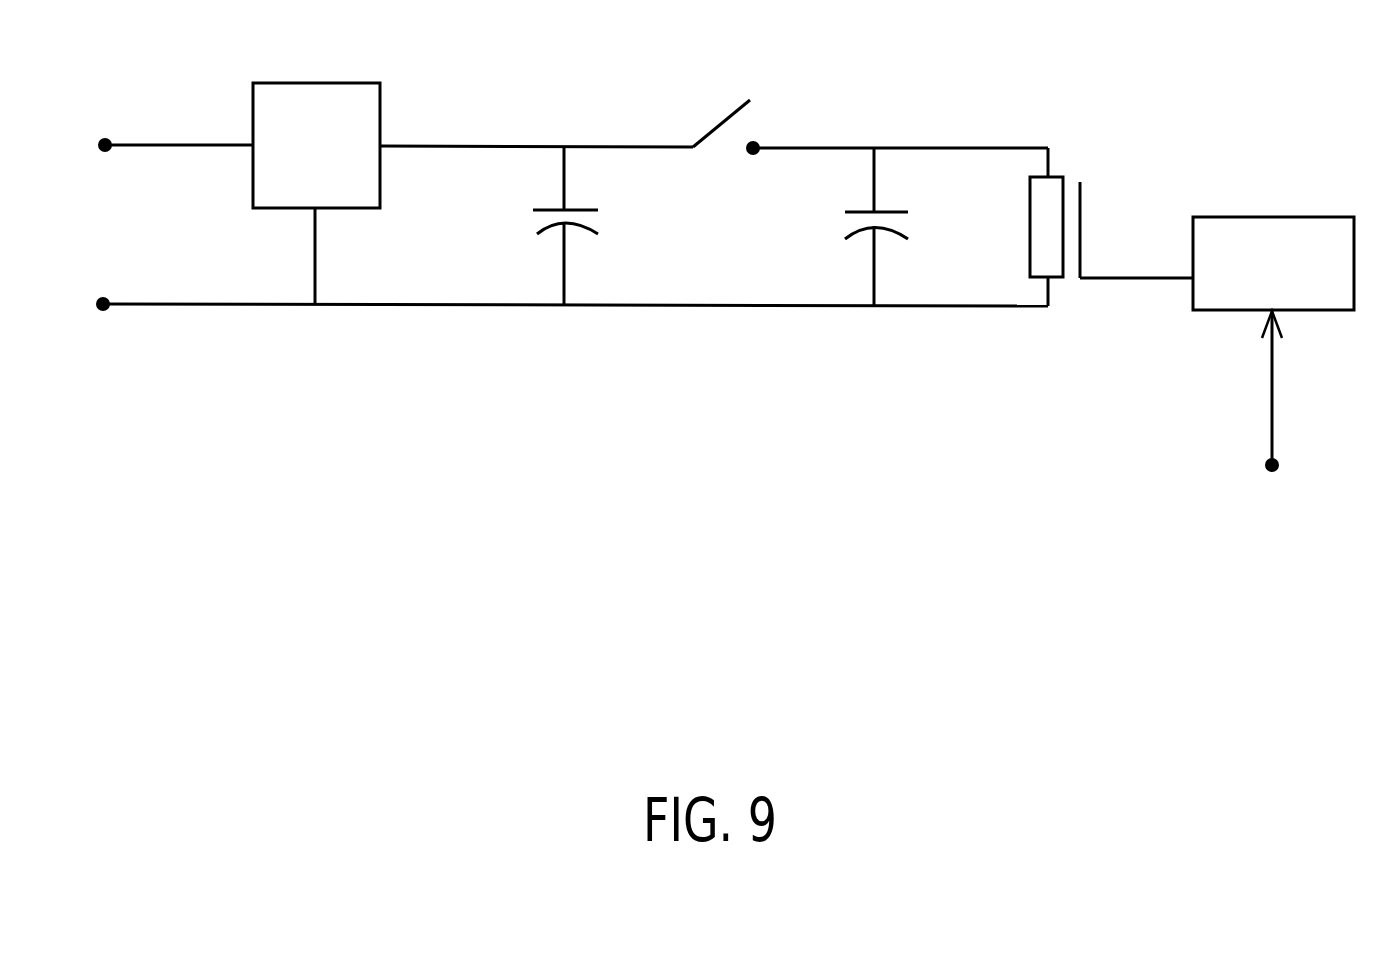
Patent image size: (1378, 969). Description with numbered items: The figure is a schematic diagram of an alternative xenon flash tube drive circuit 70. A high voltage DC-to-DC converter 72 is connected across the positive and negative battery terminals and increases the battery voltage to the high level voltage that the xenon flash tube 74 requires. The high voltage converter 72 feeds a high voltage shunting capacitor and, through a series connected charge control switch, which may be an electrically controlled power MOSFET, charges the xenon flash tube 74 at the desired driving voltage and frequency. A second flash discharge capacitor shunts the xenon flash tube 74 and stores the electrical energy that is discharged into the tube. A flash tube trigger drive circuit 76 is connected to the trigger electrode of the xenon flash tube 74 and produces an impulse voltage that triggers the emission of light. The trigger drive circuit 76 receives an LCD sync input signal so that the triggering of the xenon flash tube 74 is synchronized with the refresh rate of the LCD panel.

The xenon flash tube drive circuit 70 is at (473, 413).
The high voltage DC-to-DC converter 72 is at (332, 83).
The xenon flash tube 74 is at (1057, 177).
The flash tube trigger drive circuit 76 is at (1300, 217).